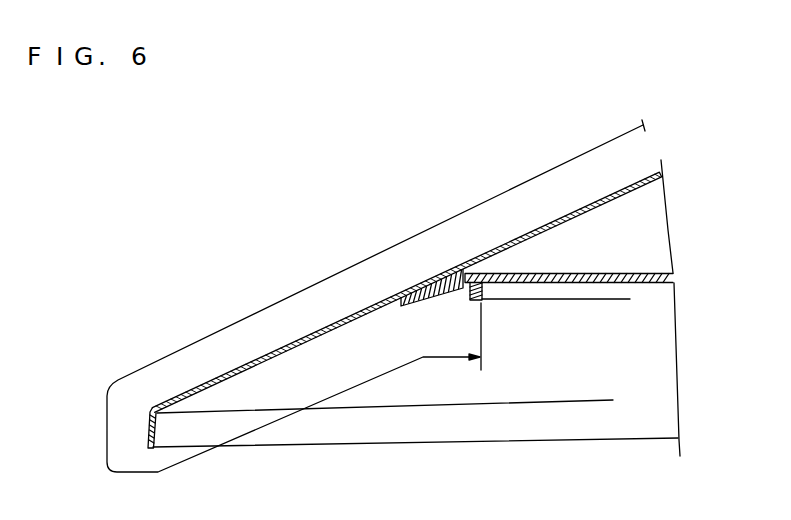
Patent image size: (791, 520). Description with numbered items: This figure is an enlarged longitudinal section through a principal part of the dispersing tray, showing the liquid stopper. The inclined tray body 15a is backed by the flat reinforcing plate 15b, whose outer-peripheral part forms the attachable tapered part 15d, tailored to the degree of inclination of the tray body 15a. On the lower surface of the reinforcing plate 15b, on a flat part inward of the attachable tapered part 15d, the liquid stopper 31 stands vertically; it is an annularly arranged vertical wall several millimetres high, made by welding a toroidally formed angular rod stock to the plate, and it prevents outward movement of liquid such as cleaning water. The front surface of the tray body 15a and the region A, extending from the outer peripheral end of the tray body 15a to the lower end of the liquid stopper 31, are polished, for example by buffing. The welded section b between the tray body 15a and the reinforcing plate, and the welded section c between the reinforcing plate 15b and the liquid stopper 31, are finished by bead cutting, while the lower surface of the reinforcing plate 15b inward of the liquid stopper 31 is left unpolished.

The tray body 15a is at (595, 208).
The reinforcing plate 15b is at (645, 273).
The attachable tapered part 15d is at (425, 300).
The liquid stopper 31 is at (484, 291).
The region A is at (418, 236).
The welded section b is at (396, 308).
The welded section c is at (462, 301).